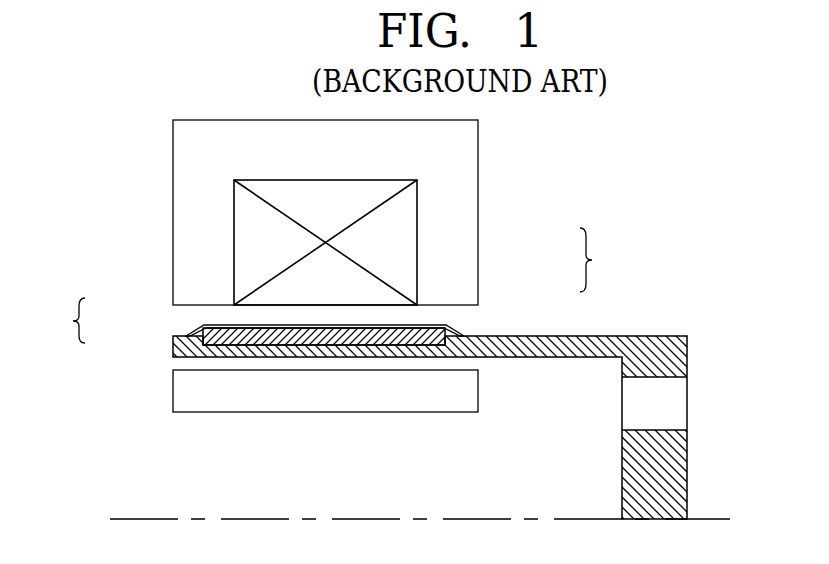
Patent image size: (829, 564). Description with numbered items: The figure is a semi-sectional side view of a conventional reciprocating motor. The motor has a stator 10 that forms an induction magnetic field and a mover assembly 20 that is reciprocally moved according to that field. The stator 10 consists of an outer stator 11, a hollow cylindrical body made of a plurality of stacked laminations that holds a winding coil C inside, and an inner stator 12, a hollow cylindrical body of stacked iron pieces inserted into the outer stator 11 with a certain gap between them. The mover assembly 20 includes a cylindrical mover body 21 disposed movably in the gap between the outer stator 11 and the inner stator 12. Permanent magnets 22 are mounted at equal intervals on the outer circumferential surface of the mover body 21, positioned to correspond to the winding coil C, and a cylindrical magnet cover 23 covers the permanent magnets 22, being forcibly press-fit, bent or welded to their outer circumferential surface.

The stator 10 is at (263, 266).
The outer stator 11 is at (188, 273).
The inner stator 12 is at (185, 389).
The winding coil C is at (250, 211).
The mover assembly 20 is at (460, 372).
The mover body 21 is at (492, 341).
The permanent magnets 22 is at (443, 328).
The magnet cover 23 is at (430, 328).